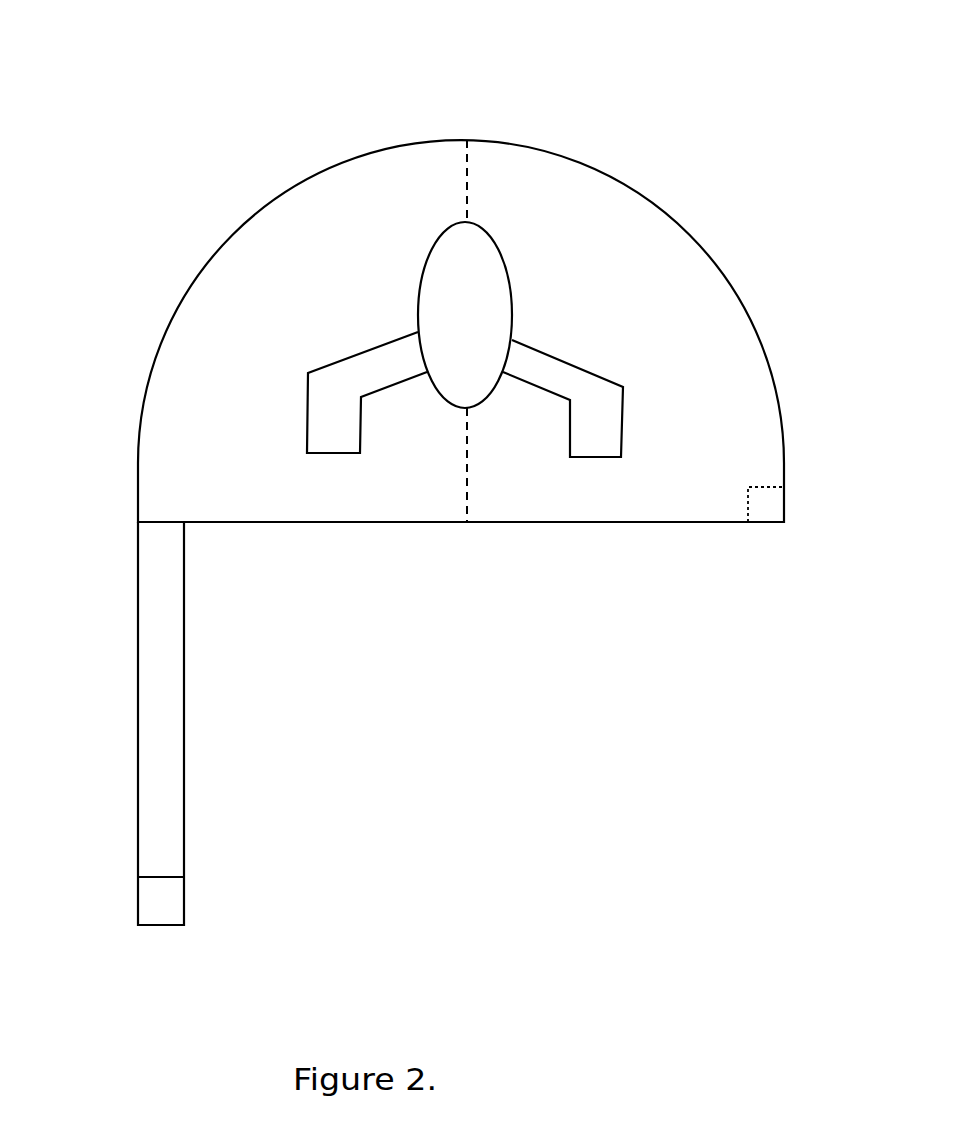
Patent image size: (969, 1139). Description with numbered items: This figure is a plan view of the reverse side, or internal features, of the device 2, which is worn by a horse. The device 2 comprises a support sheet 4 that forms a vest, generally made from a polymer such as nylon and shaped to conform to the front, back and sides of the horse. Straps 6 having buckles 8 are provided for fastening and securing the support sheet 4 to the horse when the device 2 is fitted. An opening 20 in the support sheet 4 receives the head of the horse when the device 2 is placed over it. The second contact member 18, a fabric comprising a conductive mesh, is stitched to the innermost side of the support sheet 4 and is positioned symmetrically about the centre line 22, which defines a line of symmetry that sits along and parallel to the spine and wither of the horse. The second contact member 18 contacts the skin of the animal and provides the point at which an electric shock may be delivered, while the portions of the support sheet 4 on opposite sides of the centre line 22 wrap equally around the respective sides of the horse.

The device 2 is at (458, 476).
The support sheet 4 is at (602, 268).
The straps 6 is at (163, 698).
The buckles 8 is at (762, 507).
The second contact member 18 is at (333, 415).
The opening 20 is at (462, 307).
The centre line 22 is at (467, 167).